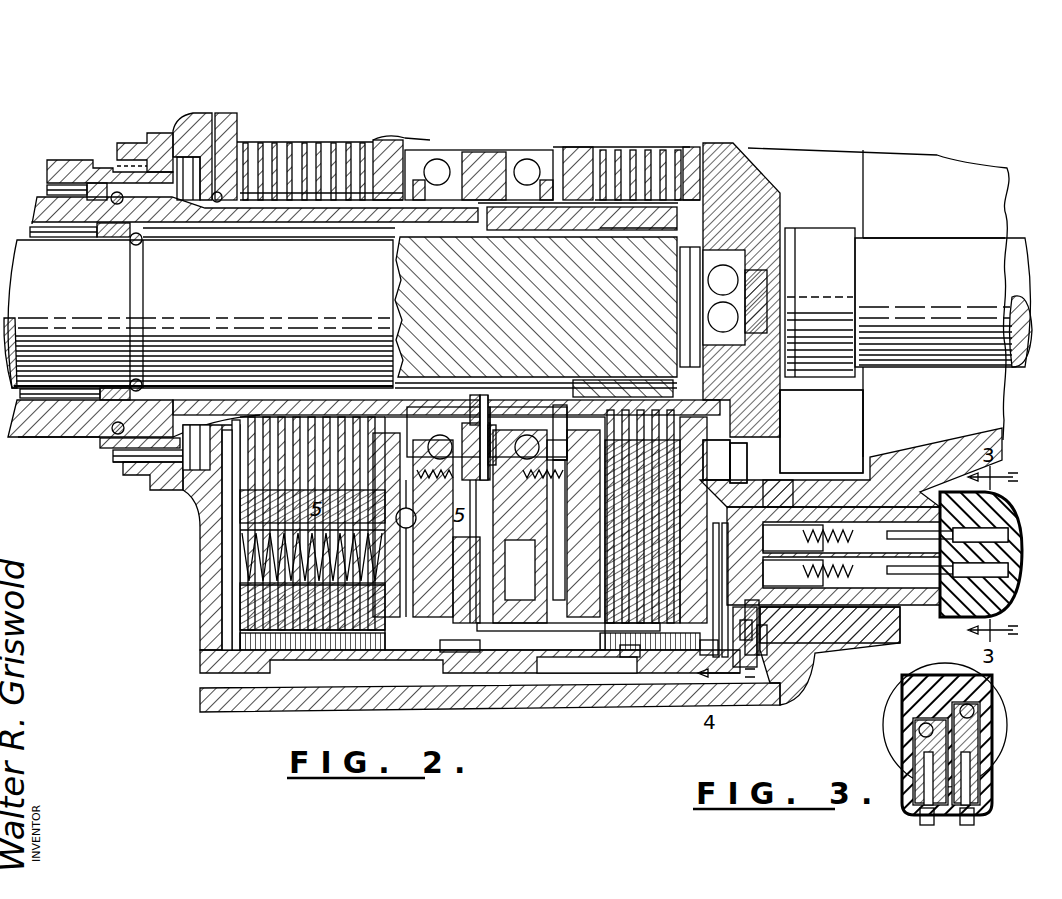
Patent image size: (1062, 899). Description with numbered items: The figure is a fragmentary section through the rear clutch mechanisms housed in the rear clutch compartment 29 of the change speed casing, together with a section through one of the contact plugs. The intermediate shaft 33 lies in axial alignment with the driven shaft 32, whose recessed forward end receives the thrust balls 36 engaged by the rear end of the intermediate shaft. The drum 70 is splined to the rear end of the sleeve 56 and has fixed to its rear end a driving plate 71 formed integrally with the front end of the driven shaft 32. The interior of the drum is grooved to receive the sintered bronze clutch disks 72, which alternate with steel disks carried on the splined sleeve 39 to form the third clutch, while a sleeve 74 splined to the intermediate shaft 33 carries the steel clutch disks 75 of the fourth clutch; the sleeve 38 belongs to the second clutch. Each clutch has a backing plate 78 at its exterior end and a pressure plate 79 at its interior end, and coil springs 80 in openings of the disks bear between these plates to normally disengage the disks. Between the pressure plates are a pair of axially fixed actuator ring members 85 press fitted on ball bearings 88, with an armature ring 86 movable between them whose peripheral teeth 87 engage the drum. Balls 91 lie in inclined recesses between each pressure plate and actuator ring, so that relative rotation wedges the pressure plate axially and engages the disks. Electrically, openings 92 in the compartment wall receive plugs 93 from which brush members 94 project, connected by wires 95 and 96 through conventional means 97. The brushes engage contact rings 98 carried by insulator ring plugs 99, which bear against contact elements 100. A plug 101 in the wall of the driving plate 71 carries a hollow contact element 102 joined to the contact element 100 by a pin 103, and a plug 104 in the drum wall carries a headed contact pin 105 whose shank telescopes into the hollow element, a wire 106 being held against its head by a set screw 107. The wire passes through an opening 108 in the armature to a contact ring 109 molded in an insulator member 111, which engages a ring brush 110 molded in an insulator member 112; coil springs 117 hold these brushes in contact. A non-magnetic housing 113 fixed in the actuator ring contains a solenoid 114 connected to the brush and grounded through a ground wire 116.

In FIG. 2, the armature ring 86 is at (488, 163).
In FIG. 2, the sleeve 74 is at (563, 232).
In FIG. 2, the intermediate shaft 33 is at (620, 334).
In FIG. 2, the driven shaft 32 is at (1015, 252).
In FIG. 2, the thrust balls 36 is at (725, 335).
In FIG. 2, the sleeve 38 is at (448, 430).
In FIG. 2, the insulator member 112 is at (462, 430).
In FIG. 2, the insulator member 111 is at (480, 430).
In FIG. 2, the contact ring 109 is at (492, 428).
In FIG. 2, the ring brush 110 is at (505, 428).
In FIG. 2, the ball bearings 88 is at (548, 420).
In FIG. 2, the pressure plate 79 is at (580, 430).
In FIG. 2, the driving plate 71 is at (760, 440).
In FIG. 2, the backing plate 78 is at (230, 560).
In FIG. 2, the insulator ring plugs 99 is at (745, 500).
In FIG. 2, the contact elements 100 is at (785, 470).
In FIG. 2, the contact rings 98 is at (785, 485).
In FIG. 2, the brush members 94 is at (793, 488).
In FIG. 2, the conventional means 97 is at (923, 510).
In FIG. 3, the conventional means 97 is at (972, 712).
In FIG. 2, the plugs 93 is at (895, 607).
In FIG. 2, the openings 92 is at (870, 640).
In FIG. 3, the openings 92 is at (934, 724).
In FIG. 2, the wire 96 is at (765, 632).
In FIG. 3, the wire 96 is at (925, 828).
In FIG. 3, the wire 95 is at (965, 828).
In FIG. 2, the sleeve 39 is at (32, 432).
In FIG. 2, the sleeve 56 is at (70, 470).
In FIG. 2, the steel clutch disks 75 is at (245, 497).
In FIG. 2, the coil springs 80 is at (240, 535).
In FIG. 2, the drum 70 is at (210, 590).
In FIG. 2, the sintered bronze clutch disks 72 is at (250, 603).
In FIG. 2, the coil springs 117 is at (405, 480).
In FIG. 2, the balls 91 is at (410, 520).
In FIG. 2, the solenoid 114 is at (485, 590).
In FIG. 2, the opening 108 is at (498, 505).
In FIG. 2, the non-magnetic housing 113 is at (560, 510).
In FIG. 2, the ground wire 116 is at (560, 595).
In FIG. 2, the pin 103 is at (700, 630).
In FIG. 2, the wire 106 is at (580, 650).
In FIG. 2, the actuator ring members 85 is at (413, 645).
In FIG. 2, the peripheral teeth 87 is at (470, 655).
In FIG. 2, the rear clutch compartment 29 is at (630, 650).
In FIG. 2, the plug 104 is at (660, 675).
In FIG. 2, the set screw 107 is at (680, 680).
In FIG. 2, the headed contact pin 105 is at (710, 680).
In FIG. 2, the hollow contact element 102 is at (728, 680).
In FIG. 2, the plug 101 is at (752, 680).